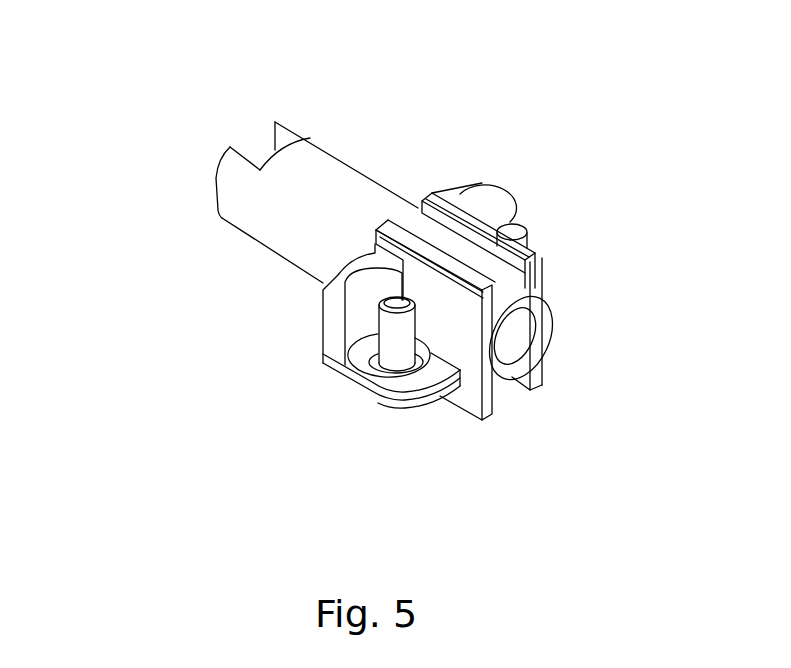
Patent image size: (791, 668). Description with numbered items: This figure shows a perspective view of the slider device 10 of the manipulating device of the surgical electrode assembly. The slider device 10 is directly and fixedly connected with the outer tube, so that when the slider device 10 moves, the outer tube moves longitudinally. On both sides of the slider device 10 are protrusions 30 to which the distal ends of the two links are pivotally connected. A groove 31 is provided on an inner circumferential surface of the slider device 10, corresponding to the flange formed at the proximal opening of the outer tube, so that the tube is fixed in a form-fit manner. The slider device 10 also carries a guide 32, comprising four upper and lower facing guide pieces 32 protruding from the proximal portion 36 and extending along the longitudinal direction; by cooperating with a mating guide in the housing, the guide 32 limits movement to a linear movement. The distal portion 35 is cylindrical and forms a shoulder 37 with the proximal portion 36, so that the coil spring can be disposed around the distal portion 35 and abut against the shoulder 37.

The slider device 10 is at (588, 148).
The protrusion 30 is at (348, 382).
The groove 31 is at (243, 180).
The guide 32 is at (443, 197).
The distal portion 35 is at (343, 182).
The proximal portion 36 is at (527, 352).
The shoulder 37 is at (337, 290).